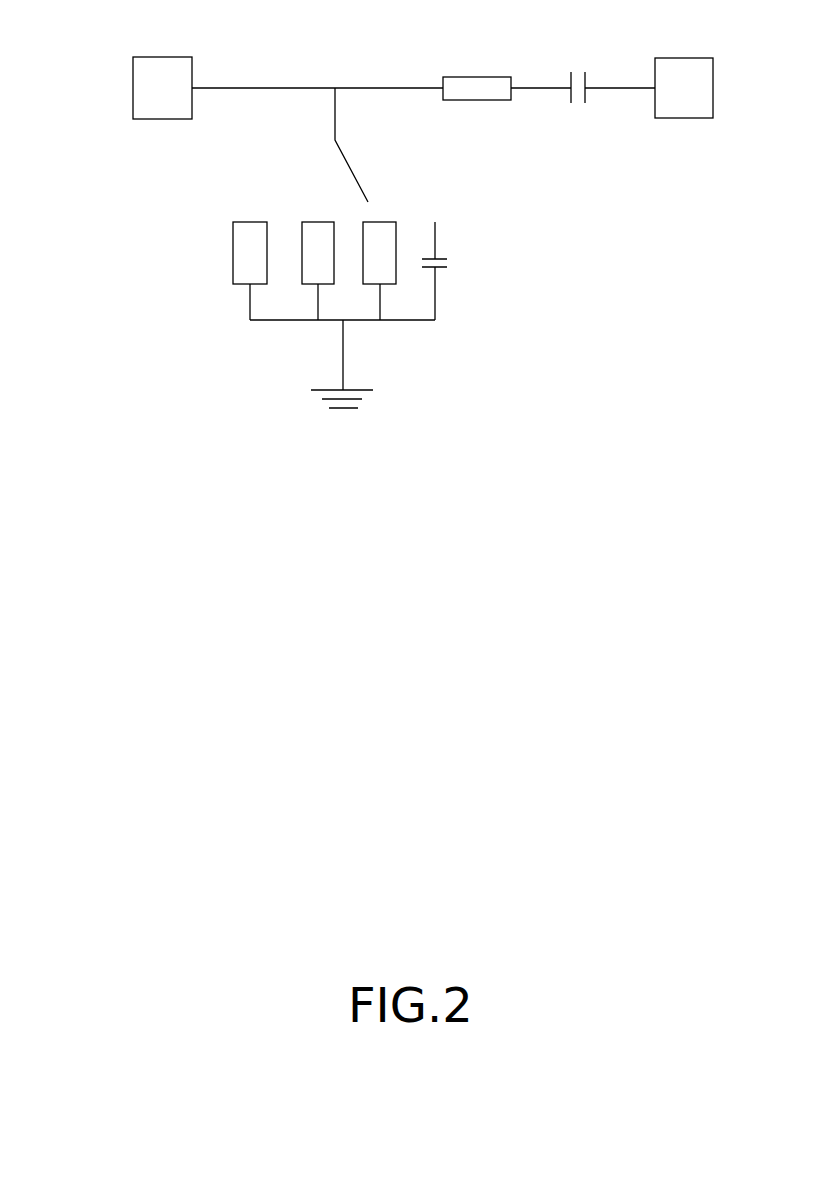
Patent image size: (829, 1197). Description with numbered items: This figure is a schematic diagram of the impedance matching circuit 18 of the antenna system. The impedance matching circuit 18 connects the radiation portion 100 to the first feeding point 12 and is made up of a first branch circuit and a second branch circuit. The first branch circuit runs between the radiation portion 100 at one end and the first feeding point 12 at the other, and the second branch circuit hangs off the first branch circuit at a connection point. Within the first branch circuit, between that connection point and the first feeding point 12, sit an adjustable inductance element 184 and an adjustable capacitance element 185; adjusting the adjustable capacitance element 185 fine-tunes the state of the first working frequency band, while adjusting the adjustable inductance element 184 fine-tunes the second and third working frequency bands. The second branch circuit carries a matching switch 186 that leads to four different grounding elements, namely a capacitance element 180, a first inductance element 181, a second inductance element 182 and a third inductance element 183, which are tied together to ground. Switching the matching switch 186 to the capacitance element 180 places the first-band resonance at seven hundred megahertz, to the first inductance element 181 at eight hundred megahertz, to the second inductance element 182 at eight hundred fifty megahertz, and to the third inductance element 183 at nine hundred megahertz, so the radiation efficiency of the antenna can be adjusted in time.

The radiation portion 100 is at (158, 90).
The first feeding point 12 is at (688, 93).
The impedance matching circuit 18 is at (533, 190).
The capacitance element 180 is at (443, 268).
The first inductance element 181 is at (383, 270).
The second inductance element 182 is at (317, 268).
The third inductance element 183 is at (247, 262).
The adjustable inductance element 184 is at (482, 88).
The adjustable capacitance element 185 is at (570, 75).
The matching switch 186 is at (350, 170).